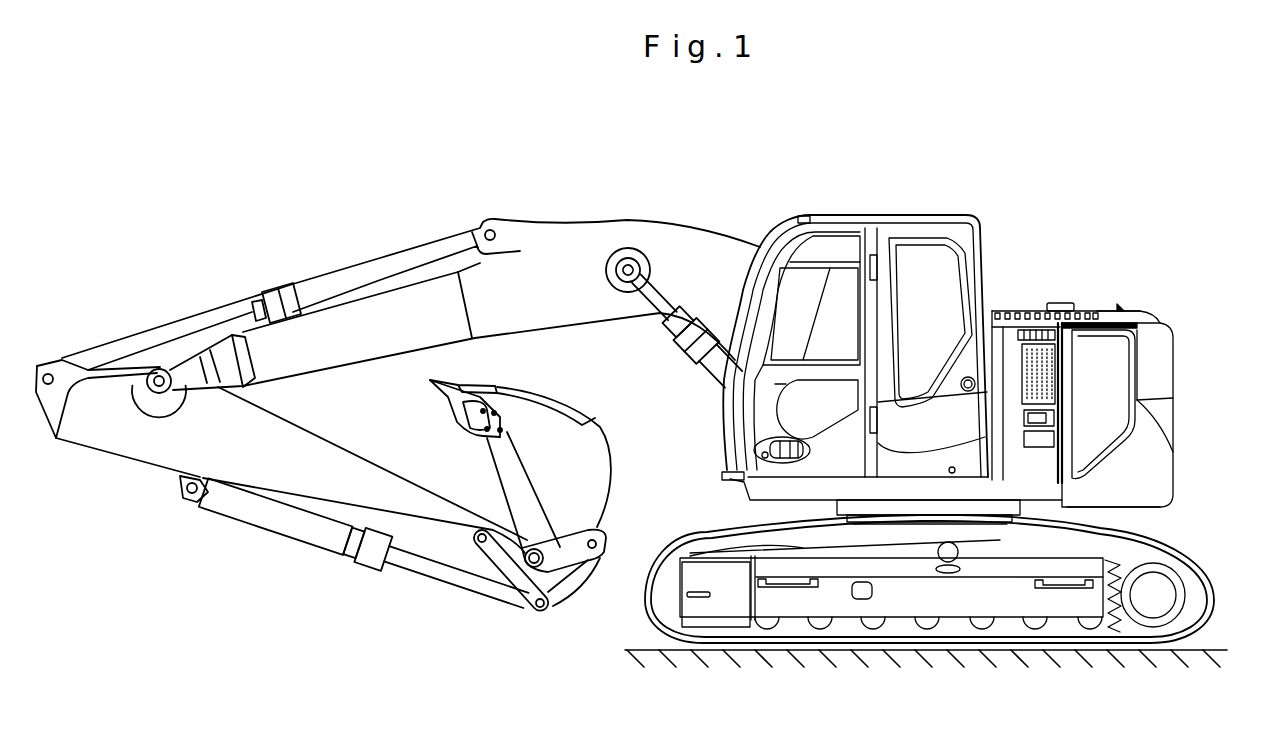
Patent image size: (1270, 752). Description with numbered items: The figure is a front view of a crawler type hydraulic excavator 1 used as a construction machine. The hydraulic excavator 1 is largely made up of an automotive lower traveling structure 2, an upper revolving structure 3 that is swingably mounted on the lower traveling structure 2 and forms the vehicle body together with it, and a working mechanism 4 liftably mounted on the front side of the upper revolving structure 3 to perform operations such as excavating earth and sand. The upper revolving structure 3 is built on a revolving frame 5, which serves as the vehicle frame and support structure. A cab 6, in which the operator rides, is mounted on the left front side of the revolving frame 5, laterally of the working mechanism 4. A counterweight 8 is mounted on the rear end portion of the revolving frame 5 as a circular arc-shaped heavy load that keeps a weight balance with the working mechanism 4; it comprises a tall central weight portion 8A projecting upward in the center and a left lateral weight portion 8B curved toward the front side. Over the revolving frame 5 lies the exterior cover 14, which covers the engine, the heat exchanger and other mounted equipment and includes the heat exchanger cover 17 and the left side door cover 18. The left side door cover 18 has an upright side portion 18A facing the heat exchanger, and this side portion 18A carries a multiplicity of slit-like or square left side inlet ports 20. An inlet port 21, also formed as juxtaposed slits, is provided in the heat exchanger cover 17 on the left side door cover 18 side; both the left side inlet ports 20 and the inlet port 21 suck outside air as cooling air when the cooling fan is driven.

The hydraulic excavator 1 is at (799, 190).
The lower traveling structure 2 is at (897, 605).
The upper revolving structure 3 is at (975, 193).
The working mechanism 4 is at (598, 240).
The revolving frame 5 is at (790, 493).
The cab 6 is at (877, 213).
The counterweight 8 is at (1153, 391).
The central weight portion 8A is at (1165, 348).
The left lateral weight portion 8B is at (1110, 495).
The exterior cover 14 is at (1106, 296).
The heat exchanger cover 17 is at (1037, 308).
The left side door cover 18 is at (1003, 347).
The side portion 18A is at (1045, 463).
The left side inlet ports 20 is at (1053, 373).
The inlet port 21 is at (1071, 300).